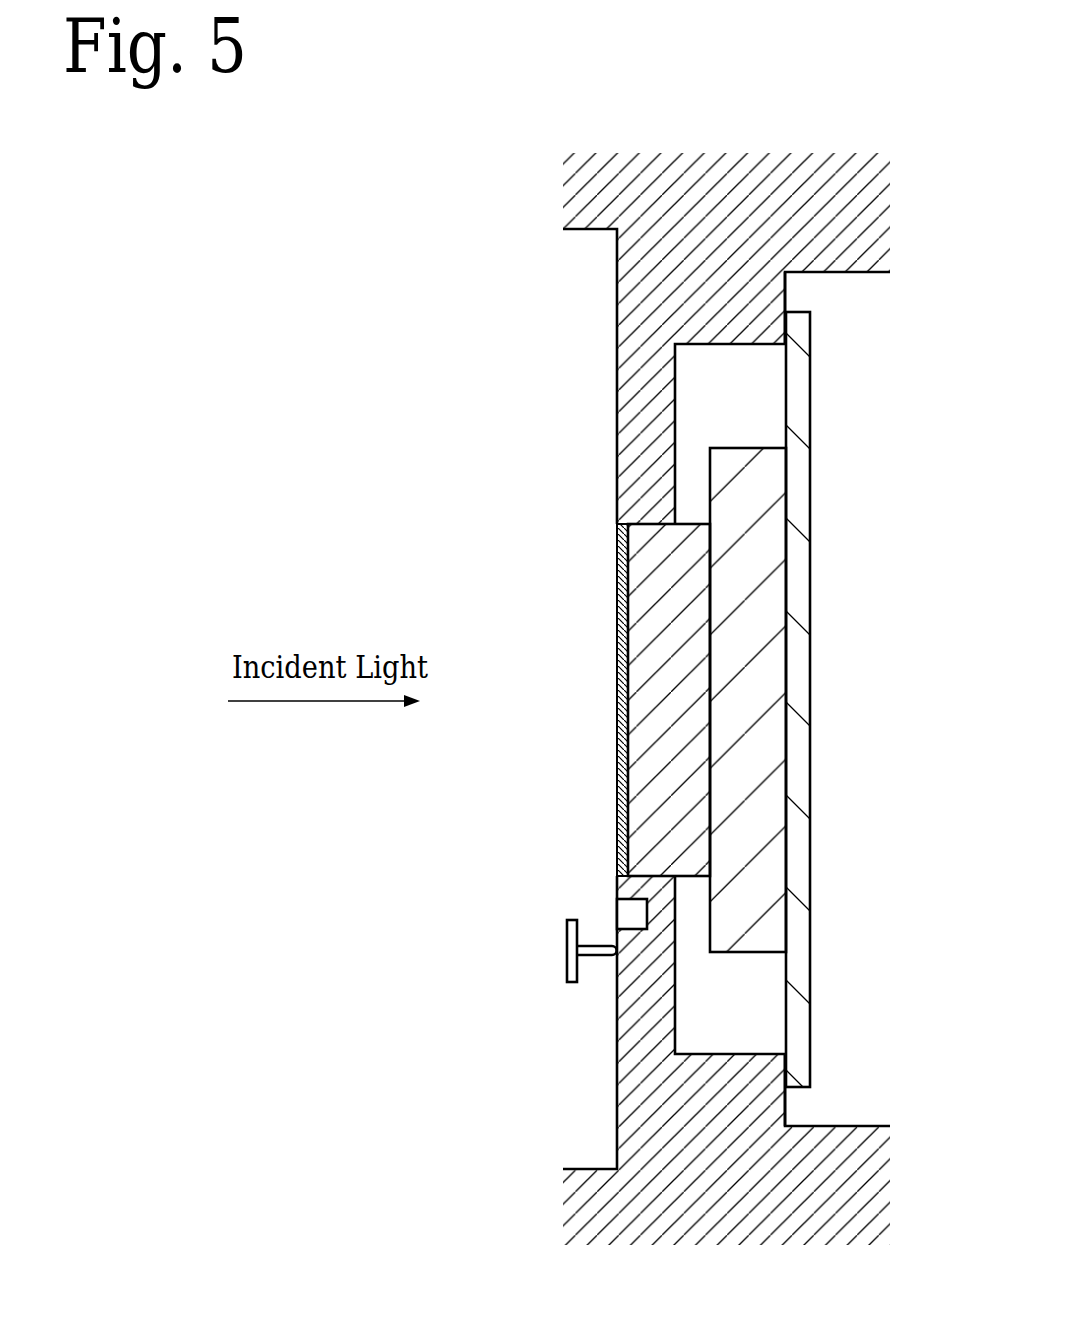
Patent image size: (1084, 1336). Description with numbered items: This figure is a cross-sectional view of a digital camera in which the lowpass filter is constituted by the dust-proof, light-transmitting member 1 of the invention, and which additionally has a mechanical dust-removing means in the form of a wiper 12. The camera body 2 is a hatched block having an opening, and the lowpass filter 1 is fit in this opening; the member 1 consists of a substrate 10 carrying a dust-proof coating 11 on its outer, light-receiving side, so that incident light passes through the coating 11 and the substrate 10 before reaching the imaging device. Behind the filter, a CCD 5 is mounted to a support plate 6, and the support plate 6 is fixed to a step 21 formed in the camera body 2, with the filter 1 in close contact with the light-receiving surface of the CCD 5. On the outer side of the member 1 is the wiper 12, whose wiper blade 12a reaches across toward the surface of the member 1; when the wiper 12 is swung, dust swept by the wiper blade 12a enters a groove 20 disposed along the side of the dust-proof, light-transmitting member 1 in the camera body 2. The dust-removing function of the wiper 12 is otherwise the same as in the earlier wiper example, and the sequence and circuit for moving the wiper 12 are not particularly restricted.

The dust-proof, light-transmitting member 1 is at (553, 791).
The camera body 2 is at (728, 257).
The CCD 5 is at (762, 725).
The support plate 6 is at (805, 585).
The substrate 10 is at (663, 750).
The dust-proof coating 11 is at (618, 797).
The wiper 12 is at (567, 937).
The wiper blade 12a is at (605, 955).
The groove 20 is at (627, 912).
The step 21 is at (760, 303).